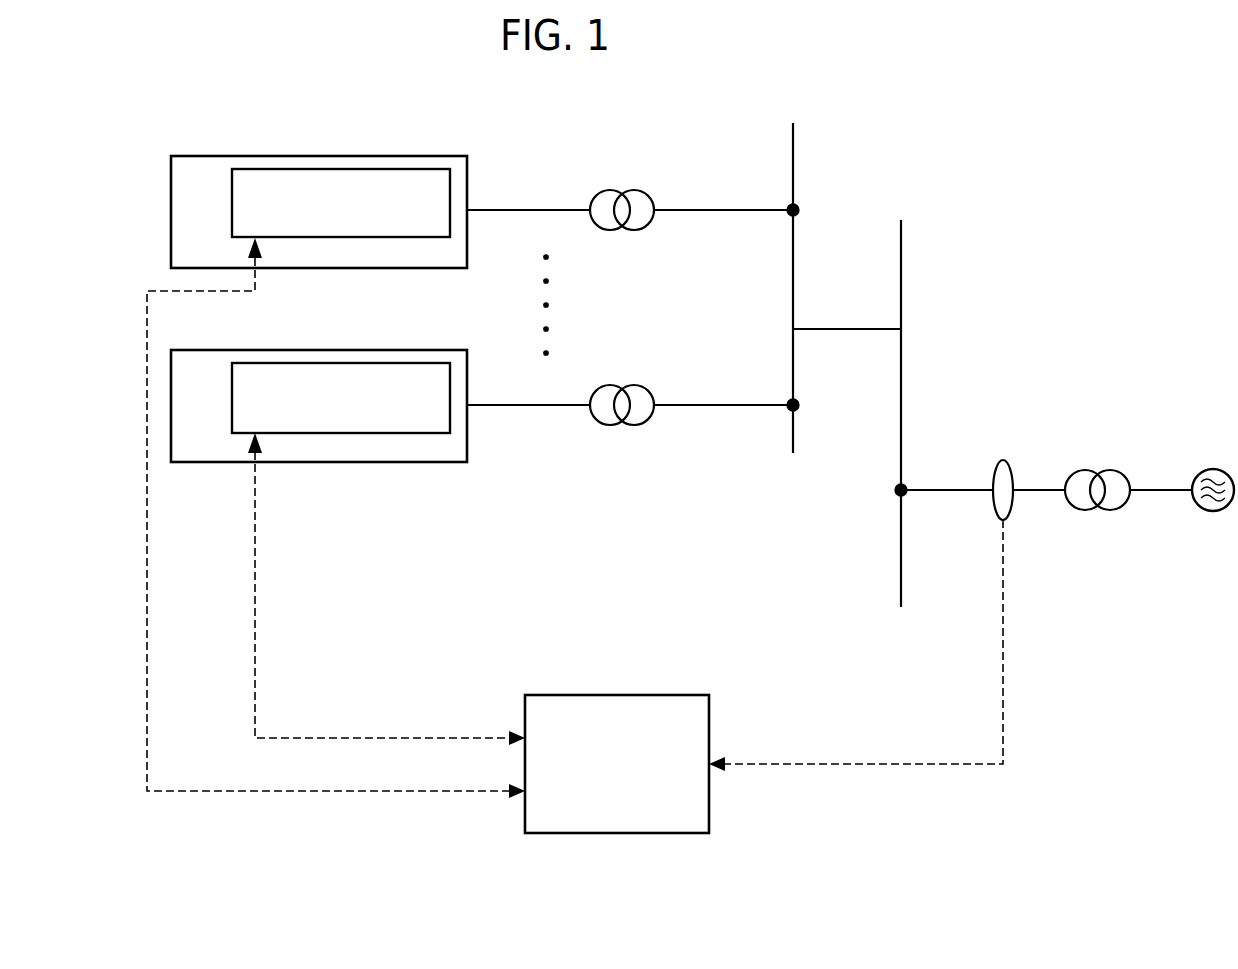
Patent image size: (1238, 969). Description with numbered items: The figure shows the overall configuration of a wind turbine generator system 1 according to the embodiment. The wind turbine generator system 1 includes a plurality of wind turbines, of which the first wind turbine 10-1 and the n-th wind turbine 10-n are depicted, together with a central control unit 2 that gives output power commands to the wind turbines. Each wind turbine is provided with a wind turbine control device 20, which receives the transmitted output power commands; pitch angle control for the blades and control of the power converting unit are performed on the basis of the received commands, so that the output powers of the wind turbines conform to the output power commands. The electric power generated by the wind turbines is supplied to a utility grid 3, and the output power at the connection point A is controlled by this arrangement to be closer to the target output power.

The wind turbine generator system 1 is at (698, 125).
The wind turbine 10-1 is at (201, 156).
The wind turbine 10-n is at (204, 462).
The wind turbine control device 20 is at (424, 169).
The central control unit 2 is at (623, 695).
The utility grid 3 is at (1212, 468).
The connection point A is at (1003, 460).